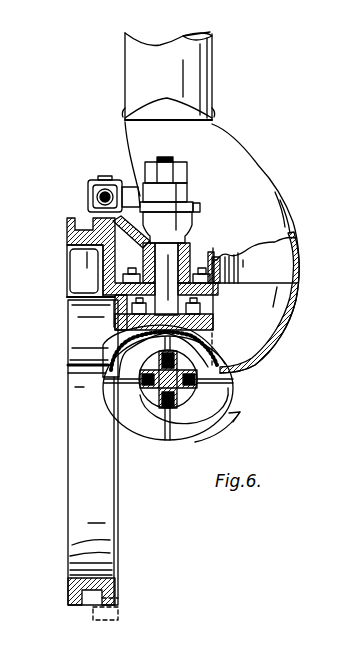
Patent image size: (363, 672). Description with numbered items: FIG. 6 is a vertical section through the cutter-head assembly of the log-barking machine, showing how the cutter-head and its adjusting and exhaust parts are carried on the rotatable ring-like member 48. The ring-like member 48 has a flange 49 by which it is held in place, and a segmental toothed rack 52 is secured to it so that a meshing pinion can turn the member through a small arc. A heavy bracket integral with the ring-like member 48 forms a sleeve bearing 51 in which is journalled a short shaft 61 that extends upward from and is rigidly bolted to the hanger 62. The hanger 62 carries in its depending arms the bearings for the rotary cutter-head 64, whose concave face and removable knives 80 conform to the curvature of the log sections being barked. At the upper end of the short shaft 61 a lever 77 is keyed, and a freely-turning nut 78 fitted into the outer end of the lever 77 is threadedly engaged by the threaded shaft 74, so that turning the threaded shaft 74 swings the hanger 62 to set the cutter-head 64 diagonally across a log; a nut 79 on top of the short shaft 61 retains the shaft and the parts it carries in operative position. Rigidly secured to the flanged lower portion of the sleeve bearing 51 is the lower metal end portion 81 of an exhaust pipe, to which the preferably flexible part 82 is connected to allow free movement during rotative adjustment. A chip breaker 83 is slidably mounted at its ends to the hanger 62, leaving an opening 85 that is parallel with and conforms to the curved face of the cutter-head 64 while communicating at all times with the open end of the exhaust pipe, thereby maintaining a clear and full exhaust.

The ring-like member 48 is at (112, 500).
The flange 49 is at (67, 222).
The sleeve bearing 51 is at (185, 262).
The segmental toothed rack 52 is at (120, 608).
The short shaft 61 is at (186, 268).
The hanger 62 is at (212, 320).
The rotary cutter-head 64 is at (218, 390).
The threaded shaft 74 is at (88, 197).
The lever 77 is at (174, 190).
The freely-turning nut 78 is at (104, 176).
The nut 79 is at (186, 168).
The knives 80 is at (122, 381).
The lower metal end portion of exhaust pipe 81 is at (290, 259).
The flexible exhaust pipe part 82 is at (203, 75).
The chip breaker 83 is at (256, 365).
The opening 85 is at (207, 360).